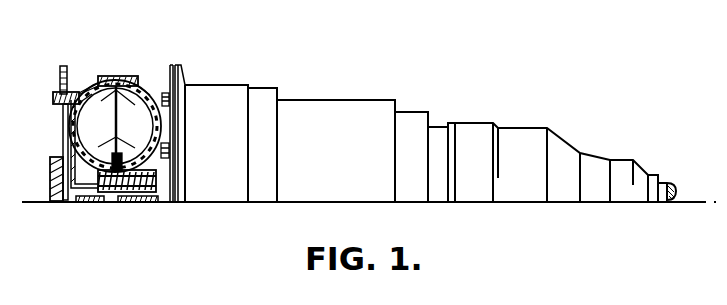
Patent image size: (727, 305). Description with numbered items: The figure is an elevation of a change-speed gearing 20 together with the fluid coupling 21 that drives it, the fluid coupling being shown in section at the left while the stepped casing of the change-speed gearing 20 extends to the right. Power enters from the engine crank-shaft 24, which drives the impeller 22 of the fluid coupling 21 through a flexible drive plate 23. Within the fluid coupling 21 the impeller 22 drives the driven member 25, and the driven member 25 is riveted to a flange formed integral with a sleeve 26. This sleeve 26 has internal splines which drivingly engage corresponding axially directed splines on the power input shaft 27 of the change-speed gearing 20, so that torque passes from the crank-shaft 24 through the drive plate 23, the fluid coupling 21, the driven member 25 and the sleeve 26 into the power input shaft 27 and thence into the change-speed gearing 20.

The change-speed gearing 20 is at (341, 107).
The fluid coupling 21 is at (108, 75).
The impeller 22 is at (137, 97).
The flexible drive plate 23 is at (63, 126).
The engine crank-shaft 24 is at (53, 179).
The driven member 25 is at (97, 96).
The sleeve 26 is at (110, 205).
The power input shaft 27 is at (135, 205).